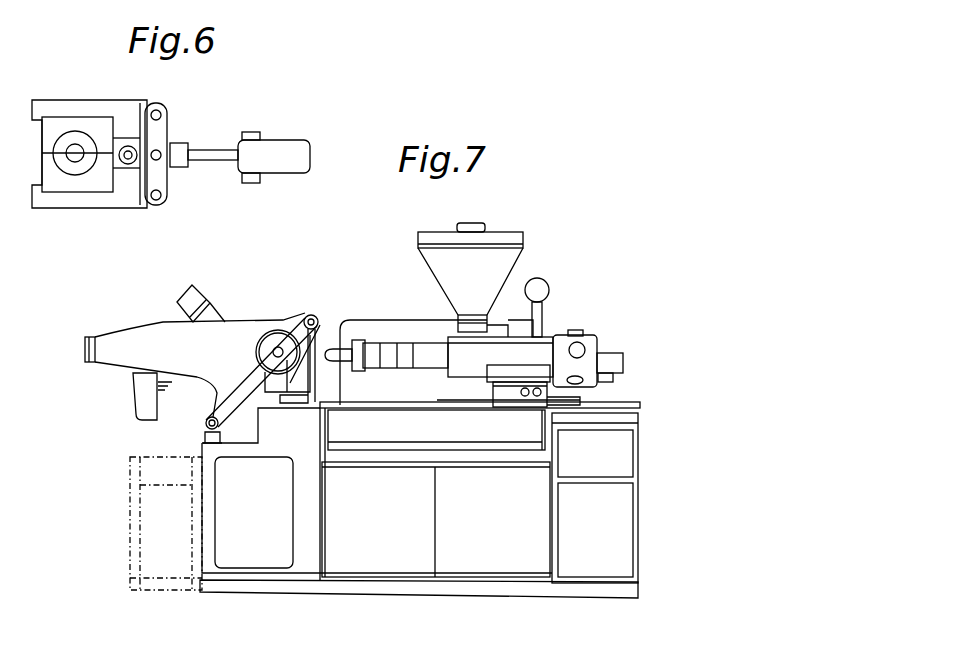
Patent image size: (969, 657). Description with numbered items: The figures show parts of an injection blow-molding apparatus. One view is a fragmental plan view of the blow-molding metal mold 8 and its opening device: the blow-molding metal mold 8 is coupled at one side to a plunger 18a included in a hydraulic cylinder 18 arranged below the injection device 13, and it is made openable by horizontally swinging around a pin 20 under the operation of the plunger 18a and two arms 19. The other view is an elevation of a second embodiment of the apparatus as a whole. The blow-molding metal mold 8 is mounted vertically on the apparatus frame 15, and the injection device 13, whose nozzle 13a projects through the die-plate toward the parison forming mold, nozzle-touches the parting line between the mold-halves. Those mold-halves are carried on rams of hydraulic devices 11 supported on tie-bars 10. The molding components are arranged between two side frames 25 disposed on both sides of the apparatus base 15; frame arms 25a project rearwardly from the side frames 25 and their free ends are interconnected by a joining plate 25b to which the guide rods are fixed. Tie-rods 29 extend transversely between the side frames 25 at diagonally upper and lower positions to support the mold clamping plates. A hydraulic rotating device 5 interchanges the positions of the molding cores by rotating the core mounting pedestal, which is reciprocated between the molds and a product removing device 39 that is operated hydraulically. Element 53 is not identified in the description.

In FIG. 7, the rotating device 5 is at (204, 292).
In FIG. 6, the blow-molding metal mold 8 is at (90, 118).
In FIG. 6, the tie-bars 10 is at (319, 11).
In FIG. 7, the hydraulic device 11 is at (278, 340).
In FIG. 7, the injection device 13 is at (378, 360).
In FIG. 7, the nozzle 13a is at (338, 345).
In FIG. 7, the apparatus frame 15 is at (303, 540).
In FIG. 6, the hydraulic cylinder 18 is at (285, 172).
In FIG. 6, the plunger 18a is at (224, 148).
In FIG. 6, the arms 19 is at (165, 128).
In FIG. 6, the pin 20 is at (128, 165).
In FIG. 7, the side frames 25 is at (243, 340).
In FIG. 7, the frame arms 25a is at (120, 340).
In FIG. 7, the joining plate 25b is at (84, 340).
In FIG. 7, the tie-rods 29 is at (318, 318).
In FIG. 7, the product removing device 39 is at (131, 397).
In FIG. 7, the container 53 is at (150, 457).